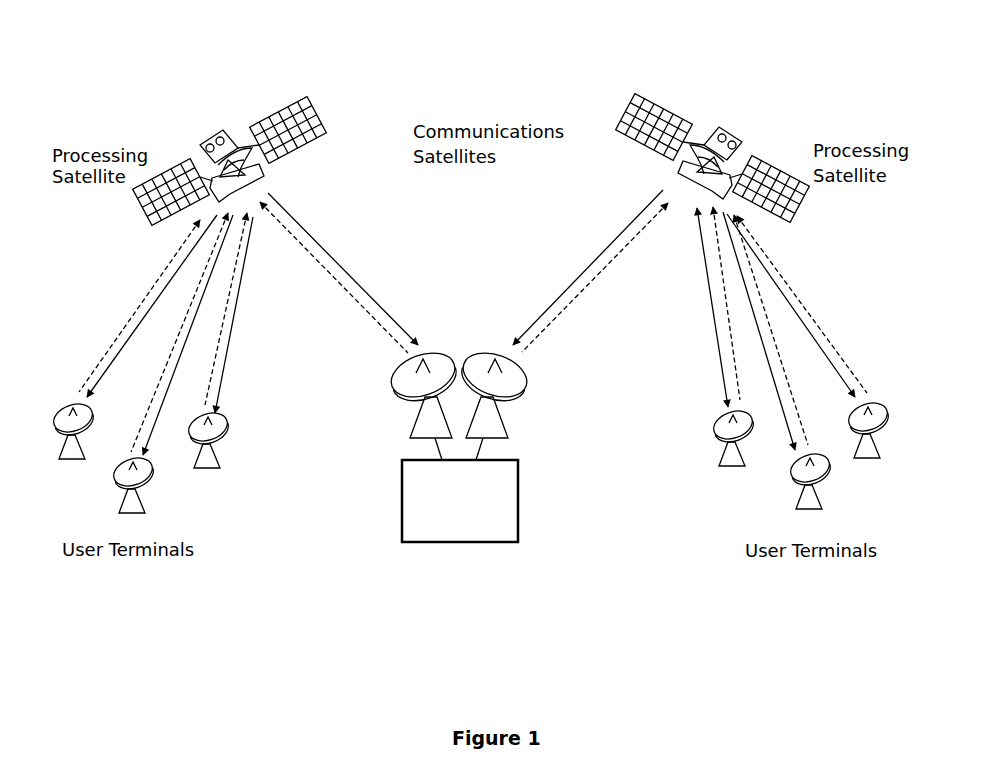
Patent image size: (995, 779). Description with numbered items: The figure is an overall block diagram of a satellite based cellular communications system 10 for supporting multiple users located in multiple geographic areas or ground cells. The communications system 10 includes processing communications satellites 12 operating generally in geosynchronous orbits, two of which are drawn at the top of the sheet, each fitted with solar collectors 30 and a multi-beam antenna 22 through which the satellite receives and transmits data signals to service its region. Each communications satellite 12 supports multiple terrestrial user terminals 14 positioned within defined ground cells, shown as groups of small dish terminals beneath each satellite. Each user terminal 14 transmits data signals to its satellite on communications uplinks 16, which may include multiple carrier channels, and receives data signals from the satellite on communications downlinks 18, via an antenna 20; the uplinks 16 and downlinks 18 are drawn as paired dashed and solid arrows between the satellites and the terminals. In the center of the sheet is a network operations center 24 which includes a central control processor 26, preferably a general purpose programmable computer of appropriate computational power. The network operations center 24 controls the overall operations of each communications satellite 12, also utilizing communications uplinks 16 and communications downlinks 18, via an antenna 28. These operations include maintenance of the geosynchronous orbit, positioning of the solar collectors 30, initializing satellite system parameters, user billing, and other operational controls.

The satellite based cellular communications system 10 is at (568, 53).
The processing communications satellite 12 is at (213, 138).
The user terminal 14 is at (202, 460).
The communications uplink 16 is at (132, 317).
The communications downlink 18 is at (237, 310).
The antenna 20 is at (220, 432).
The multi-beam antenna 22 is at (263, 177).
The network operations center 24 is at (392, 570).
The central control processor 26 is at (475, 537).
The antenna 28 is at (400, 377).
The solar collector 30 is at (323, 133).